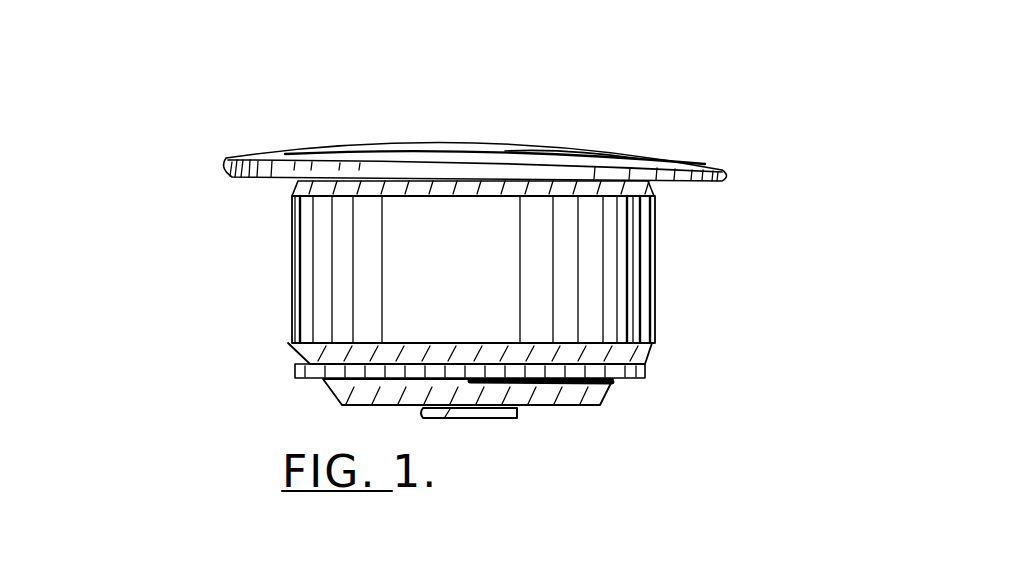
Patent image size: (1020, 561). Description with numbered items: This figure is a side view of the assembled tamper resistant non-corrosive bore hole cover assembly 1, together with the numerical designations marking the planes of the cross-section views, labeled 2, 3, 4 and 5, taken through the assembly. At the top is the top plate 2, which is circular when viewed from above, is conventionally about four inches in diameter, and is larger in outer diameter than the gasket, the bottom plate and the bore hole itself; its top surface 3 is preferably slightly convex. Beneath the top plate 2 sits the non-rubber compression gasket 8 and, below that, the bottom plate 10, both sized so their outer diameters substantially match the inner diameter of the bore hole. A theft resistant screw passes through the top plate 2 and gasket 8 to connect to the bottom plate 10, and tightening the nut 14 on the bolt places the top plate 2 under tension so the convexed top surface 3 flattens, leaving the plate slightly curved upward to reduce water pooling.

The tamper resistant non-corrosive bore hole cover assembly 1 is at (104, 443).
The top plate 2 is at (224, 163).
The top surface 3 is at (563, 151).
The section line 4-4 / lower band 4 is at (237, 420).
The section line 5-5 / upper band 5 is at (245, 235).
The non-rubber compression gasket 8 is at (657, 283).
The bottom plate 10 is at (645, 381).
The nut 14 is at (518, 414).